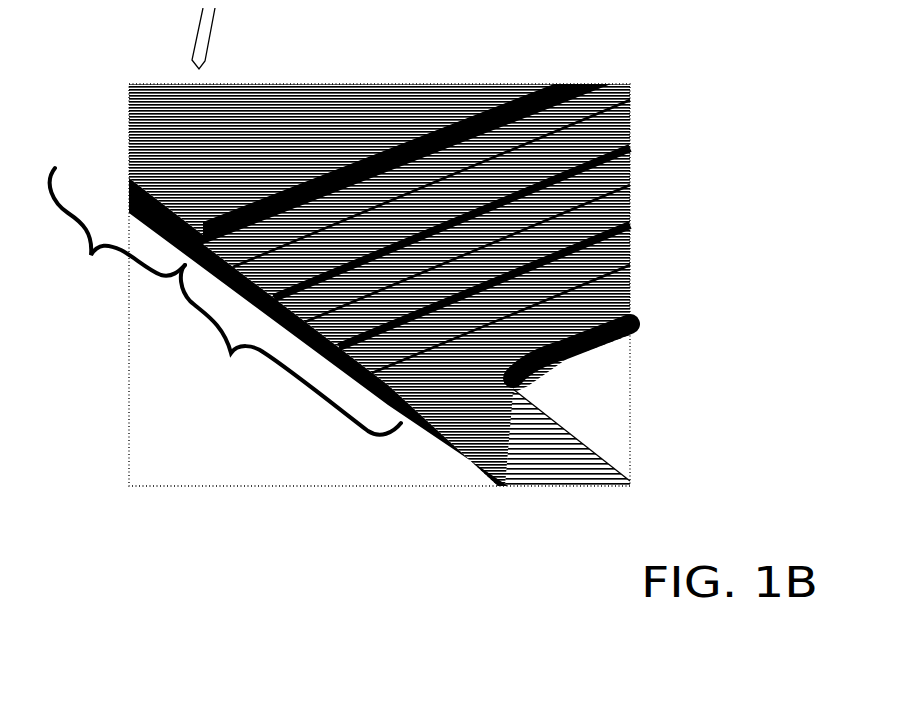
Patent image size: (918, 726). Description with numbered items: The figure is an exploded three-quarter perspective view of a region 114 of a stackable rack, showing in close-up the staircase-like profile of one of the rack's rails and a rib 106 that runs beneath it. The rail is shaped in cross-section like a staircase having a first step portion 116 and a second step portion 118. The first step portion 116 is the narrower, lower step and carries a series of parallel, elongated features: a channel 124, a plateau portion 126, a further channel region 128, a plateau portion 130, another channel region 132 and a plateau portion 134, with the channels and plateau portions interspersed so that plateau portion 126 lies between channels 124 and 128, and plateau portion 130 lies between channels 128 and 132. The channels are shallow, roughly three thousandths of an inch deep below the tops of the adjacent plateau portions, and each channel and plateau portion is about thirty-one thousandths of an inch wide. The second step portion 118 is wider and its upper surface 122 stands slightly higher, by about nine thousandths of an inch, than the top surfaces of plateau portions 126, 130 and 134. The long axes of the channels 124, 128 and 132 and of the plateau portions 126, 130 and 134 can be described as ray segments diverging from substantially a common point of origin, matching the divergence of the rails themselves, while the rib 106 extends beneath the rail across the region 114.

The rib 106 is at (540, 452).
The region 114 is at (623, 373).
The first step portion 116 is at (223, 347).
The second step portion 118 is at (83, 247).
The upper surface 122 is at (247, 107).
The channel 124 is at (240, 245).
The plateau portion 126 is at (333, 236).
The channel region 128 is at (297, 300).
The plateau portion 130 is at (327, 318).
The channel region 132 is at (358, 352).
The plateau portion 134 is at (537, 308).